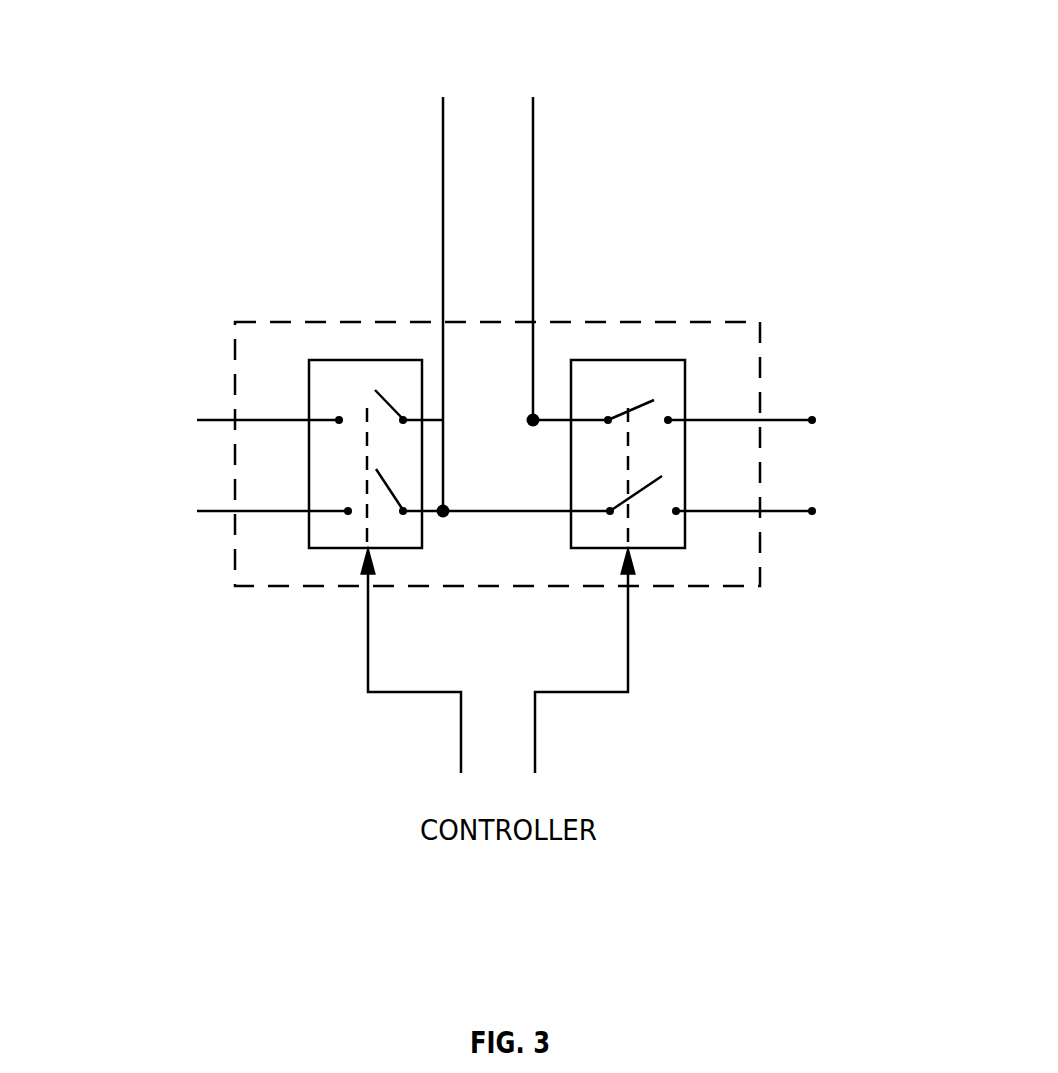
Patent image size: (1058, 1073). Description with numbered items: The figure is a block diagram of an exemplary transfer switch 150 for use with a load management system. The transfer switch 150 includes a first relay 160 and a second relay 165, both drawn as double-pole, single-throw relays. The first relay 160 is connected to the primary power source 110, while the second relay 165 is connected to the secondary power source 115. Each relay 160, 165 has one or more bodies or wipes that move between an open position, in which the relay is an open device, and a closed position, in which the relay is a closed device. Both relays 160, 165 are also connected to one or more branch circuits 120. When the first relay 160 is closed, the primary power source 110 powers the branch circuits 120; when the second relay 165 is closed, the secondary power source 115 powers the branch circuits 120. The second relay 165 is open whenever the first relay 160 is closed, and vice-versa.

The primary power source 110 is at (875, 530).
The secondary power source 115 is at (143, 543).
The branch circuits 120 is at (622, 28).
The transfer switch 150 is at (760, 378).
The first relay 160 is at (618, 358).
The second relay 165 is at (402, 358).